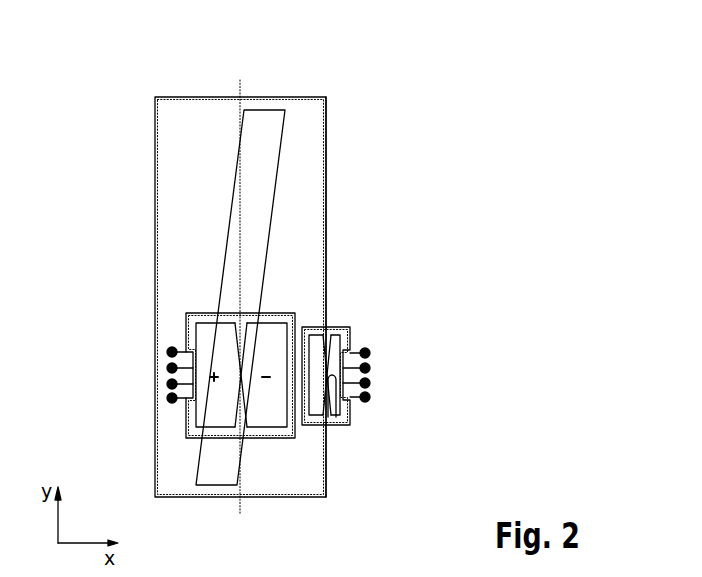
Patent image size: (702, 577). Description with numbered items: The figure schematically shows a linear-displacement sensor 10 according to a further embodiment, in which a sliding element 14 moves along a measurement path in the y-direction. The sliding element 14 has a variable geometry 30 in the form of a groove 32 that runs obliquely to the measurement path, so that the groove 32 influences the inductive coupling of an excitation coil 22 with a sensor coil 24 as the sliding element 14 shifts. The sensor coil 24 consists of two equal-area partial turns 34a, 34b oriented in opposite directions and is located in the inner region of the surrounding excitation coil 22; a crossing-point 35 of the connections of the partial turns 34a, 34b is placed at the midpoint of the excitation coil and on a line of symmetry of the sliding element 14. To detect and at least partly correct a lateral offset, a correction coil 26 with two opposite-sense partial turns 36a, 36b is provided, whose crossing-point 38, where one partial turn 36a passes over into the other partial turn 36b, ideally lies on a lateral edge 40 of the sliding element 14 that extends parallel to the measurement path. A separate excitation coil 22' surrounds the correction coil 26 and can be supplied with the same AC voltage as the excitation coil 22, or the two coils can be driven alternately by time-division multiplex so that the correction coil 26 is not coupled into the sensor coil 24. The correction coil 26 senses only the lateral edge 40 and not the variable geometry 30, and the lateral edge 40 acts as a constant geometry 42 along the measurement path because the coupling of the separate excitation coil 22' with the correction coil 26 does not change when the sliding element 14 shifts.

The linear-displacement sensor 10 is at (372, 95).
The sliding element 14 is at (198, 107).
The excitation coil 22 is at (207, 361).
The separate excitation coil 22' is at (339, 345).
The sensor coil 24 is at (193, 330).
The correction coil 26 is at (340, 407).
The variable geometry 30 is at (257, 118).
The groove 32 is at (273, 115).
The partial turn 34a is at (212, 415).
The partial turn 34b is at (265, 418).
The crossing-point 35 is at (239, 373).
The partial turn 36a is at (337, 340).
The partial turn 36b is at (315, 338).
The crossing-point 38 is at (327, 386).
The lateral edge 40 is at (326, 163).
The constant geometry 42 is at (376, 132).